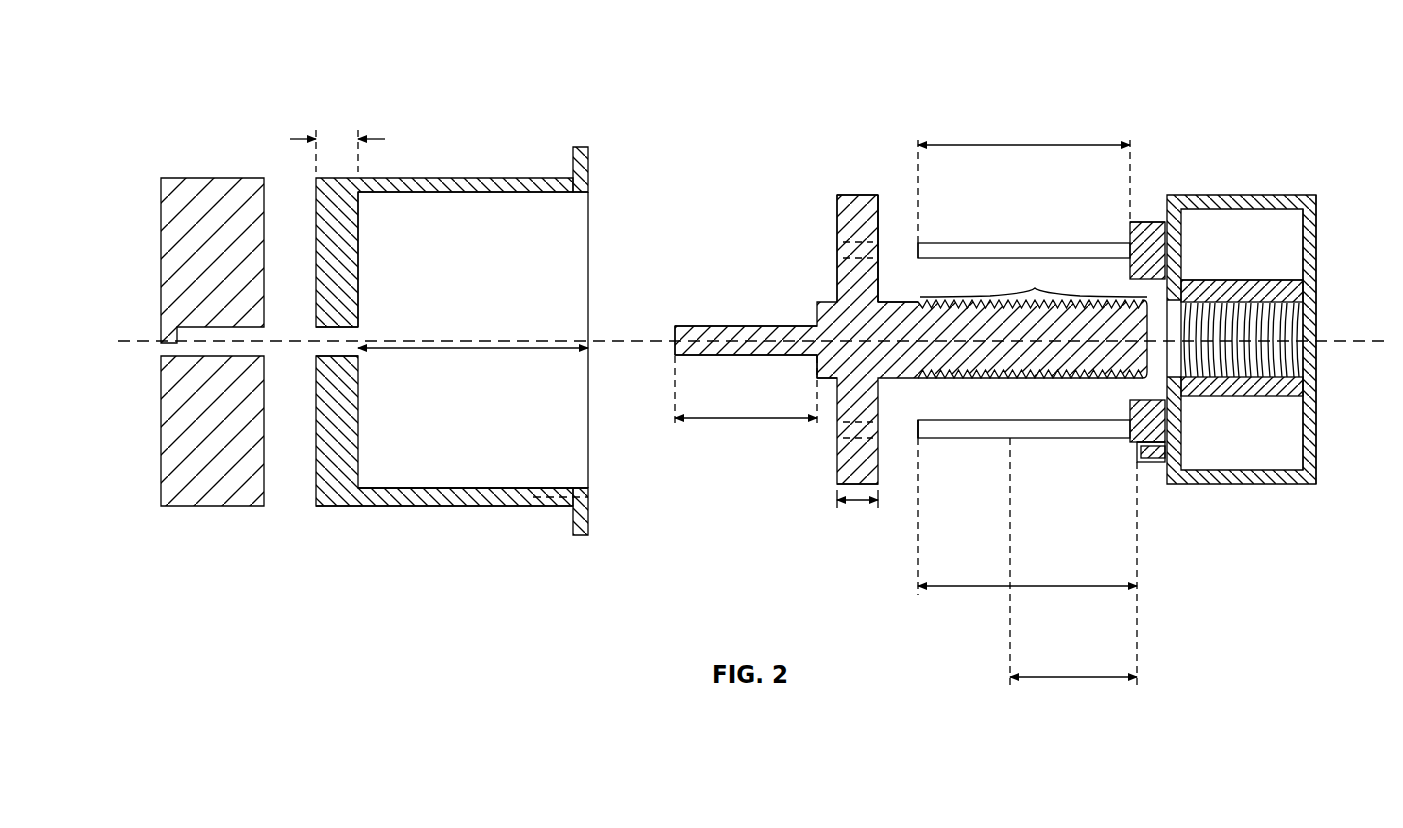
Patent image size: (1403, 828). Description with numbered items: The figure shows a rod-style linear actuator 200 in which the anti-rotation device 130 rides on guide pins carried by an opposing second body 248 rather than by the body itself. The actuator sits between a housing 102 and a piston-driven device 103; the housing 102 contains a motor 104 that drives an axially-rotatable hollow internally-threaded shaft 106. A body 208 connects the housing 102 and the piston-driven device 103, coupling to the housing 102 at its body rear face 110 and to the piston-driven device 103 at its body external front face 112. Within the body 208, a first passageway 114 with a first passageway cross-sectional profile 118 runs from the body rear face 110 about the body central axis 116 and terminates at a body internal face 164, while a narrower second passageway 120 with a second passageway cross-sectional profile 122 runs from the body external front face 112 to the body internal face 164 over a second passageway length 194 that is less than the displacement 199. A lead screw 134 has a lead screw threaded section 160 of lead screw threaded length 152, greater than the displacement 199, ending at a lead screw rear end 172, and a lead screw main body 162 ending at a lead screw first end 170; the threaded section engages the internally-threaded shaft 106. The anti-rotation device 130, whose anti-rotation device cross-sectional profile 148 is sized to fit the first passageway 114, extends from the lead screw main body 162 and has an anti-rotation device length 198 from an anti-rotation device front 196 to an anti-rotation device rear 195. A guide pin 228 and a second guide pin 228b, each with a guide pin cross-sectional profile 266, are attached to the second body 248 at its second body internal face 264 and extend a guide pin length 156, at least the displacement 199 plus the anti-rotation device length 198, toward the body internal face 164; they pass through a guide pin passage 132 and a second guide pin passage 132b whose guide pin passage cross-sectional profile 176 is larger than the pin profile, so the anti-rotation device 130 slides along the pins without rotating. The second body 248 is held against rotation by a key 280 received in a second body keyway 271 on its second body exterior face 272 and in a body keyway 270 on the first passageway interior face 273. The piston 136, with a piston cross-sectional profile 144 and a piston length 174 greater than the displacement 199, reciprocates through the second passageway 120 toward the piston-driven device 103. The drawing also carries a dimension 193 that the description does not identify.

The rod-style linear actuator 200 is at (1034, 62).
The housing 102 is at (1190, 484).
The piston-driven device 103 is at (178, 495).
The motor 104 is at (1290, 460).
The axially-rotatable hollow internally-threaded shaft 106 is at (1245, 300).
The body rear face 110 is at (590, 200).
The body external front face 112 is at (316, 483).
The first passageway 114 is at (580, 468).
The body central axis 116 is at (408, 340).
The first passageway cross-sectional profile 118 is at (590, 248).
The second passageway 120 is at (316, 357).
The second passageway cross-sectional profile 122 is at (316, 337).
The anti-rotation device 130 is at (850, 193).
The guide pin passage 132 is at (838, 422).
The second guide pin passage 132b is at (845, 248).
The lead screw 134 is at (1070, 378).
The piston 136 is at (700, 325).
The piston cross-sectional profile 144 is at (673, 336).
The anti-rotation device cross-sectional profile 148 is at (878, 205).
The lead screw threaded length 152 is at (1055, 587).
The guide pin length 156 is at (1030, 142).
The lead screw threaded section 160 is at (1033, 279).
The lead screw main body 162 is at (900, 300).
The body internal face 164 is at (358, 230).
The lead screw first end 170 is at (808, 363).
The lead screw rear end 172 is at (1180, 290).
The piston length 174 is at (710, 424).
The guide pin passage cross-sectional profile 176 is at (918, 246).
The length 193 is at (470, 348).
The second passageway length 194 is at (365, 137).
The anti-rotation device rear 195 is at (878, 478).
The anti-rotation device front 196 is at (838, 462).
The anti-rotation device length 198 is at (855, 502).
The displacement 199 is at (1055, 678).
The body 208 is at (365, 508).
The guide pin 228 is at (1058, 436).
The second guide pin 228b is at (1003, 246).
The second body 248 is at (1133, 238).
The second body internal face 264 is at (1135, 440).
The guide pin cross-sectional profile 266 is at (918, 430).
The body keyway 270 is at (545, 488).
The second body keyway 271 is at (1140, 452).
The second body exterior face 272 is at (1150, 220).
The first passageway interior face 273 is at (476, 488).
The key 280 is at (1150, 462).